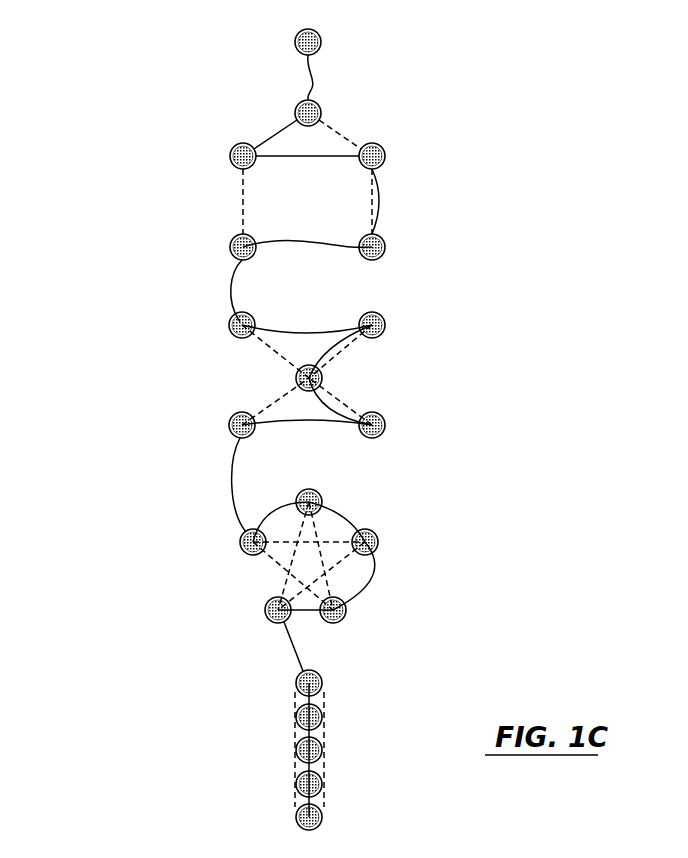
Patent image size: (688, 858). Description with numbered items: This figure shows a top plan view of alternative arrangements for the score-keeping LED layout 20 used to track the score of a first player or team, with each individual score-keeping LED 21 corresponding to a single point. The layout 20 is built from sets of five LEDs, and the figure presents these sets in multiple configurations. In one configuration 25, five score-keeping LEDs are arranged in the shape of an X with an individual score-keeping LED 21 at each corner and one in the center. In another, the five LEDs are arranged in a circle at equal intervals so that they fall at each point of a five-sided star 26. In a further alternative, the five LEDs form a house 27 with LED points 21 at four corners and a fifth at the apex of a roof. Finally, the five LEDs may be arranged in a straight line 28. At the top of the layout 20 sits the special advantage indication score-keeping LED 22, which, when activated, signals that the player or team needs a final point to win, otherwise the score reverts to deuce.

The first plurality of score-keeping LED lamps 20 is at (69, 263).
The individual score-keeping LED lamp 21 is at (230, 157).
The advantage indication score-keeping LED 22 is at (295, 55).
The set of five score-keeping LEDs arranged in an X shape 25 is at (392, 303).
The five-sided star configuration 26 is at (392, 485).
The house configuration 27 is at (403, 113).
The straight line configuration 28 is at (280, 678).